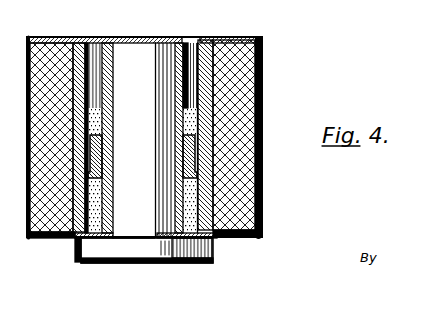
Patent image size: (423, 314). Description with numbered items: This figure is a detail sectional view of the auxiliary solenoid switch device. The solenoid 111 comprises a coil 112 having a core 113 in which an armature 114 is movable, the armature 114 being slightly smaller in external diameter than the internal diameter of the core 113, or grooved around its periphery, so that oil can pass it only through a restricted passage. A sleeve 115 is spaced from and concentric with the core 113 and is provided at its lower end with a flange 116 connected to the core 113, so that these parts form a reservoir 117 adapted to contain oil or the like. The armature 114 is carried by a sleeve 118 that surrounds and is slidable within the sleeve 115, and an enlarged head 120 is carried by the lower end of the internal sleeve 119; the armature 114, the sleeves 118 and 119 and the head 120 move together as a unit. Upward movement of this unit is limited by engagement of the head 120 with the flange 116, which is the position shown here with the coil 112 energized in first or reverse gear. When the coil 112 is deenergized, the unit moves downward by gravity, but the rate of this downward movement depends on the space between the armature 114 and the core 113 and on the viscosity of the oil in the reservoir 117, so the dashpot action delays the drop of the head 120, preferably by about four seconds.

The solenoid 111 is at (263, 103).
The coil 112 is at (197, 144).
The core 113 is at (205, 50).
The armature 114 is at (263, 123).
The sleeve 115 is at (198, 192).
The flange 116 is at (213, 235).
The reservoir 117 is at (262, 206).
The sleeve 118 is at (186, 43).
The internal sleeve 119 is at (128, 63).
The enlarged head 120 is at (130, 248).